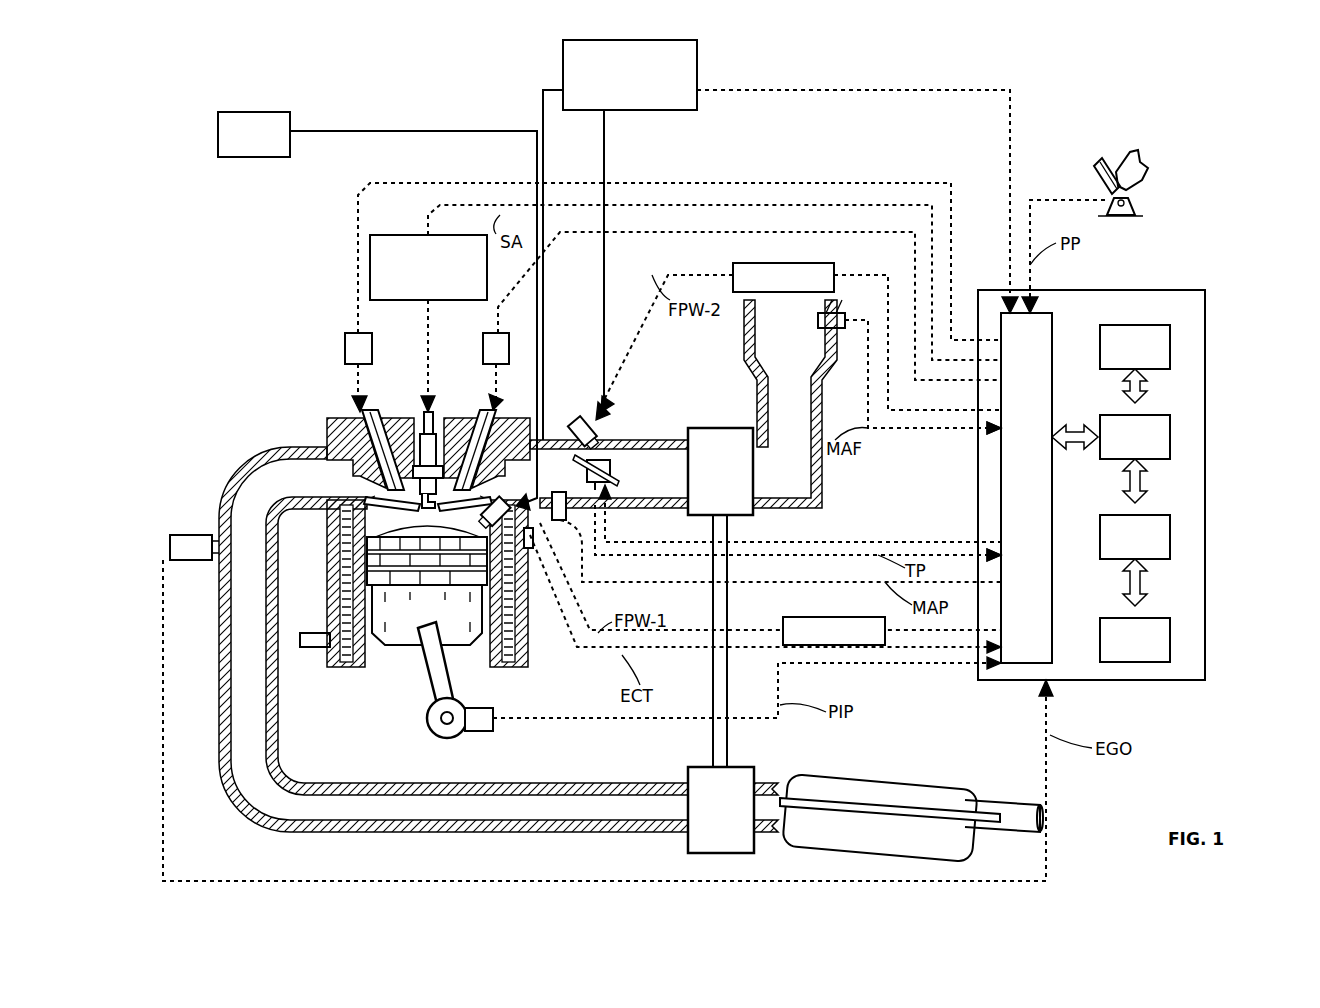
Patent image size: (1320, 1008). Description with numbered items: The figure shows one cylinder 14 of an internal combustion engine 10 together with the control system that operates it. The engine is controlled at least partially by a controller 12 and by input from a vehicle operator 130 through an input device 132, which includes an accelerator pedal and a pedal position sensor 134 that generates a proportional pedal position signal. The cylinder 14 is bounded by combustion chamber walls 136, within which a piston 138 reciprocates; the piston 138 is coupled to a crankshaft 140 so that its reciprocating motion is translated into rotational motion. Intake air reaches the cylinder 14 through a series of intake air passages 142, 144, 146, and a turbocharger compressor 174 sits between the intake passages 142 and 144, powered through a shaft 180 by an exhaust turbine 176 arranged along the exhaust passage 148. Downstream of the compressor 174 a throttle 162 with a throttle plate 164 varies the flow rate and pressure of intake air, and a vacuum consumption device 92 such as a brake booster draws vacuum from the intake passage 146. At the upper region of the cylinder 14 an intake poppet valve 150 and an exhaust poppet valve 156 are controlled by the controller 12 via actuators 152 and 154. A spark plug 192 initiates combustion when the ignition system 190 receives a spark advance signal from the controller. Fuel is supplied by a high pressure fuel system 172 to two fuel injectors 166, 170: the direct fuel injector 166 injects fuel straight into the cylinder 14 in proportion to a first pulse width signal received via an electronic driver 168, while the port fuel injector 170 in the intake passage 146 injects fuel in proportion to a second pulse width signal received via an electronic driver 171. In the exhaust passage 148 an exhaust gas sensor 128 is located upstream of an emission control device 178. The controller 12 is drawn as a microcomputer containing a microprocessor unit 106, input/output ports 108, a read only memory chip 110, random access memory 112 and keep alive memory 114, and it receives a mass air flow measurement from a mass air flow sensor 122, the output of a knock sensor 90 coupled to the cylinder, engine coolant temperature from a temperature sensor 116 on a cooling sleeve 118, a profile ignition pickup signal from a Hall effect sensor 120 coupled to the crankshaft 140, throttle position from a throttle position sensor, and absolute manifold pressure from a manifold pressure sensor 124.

The internal combustion engine 10 is at (262, 377).
The controller 12 is at (1195, 292).
The cylinder 14 is at (350, 533).
The knock sensor 90 is at (315, 648).
The vacuum consumption device 92 is at (377, 311).
The microprocessor unit 106 is at (1170, 437).
The input/output ports 108 is at (1055, 318).
The read only memory chip 110 is at (1170, 345).
The random access memory 112 is at (1170, 537).
The keep alive memory 114 is at (1170, 640).
The temperature sensor 116 is at (535, 548).
The cooling sleeve 118 is at (520, 620).
The Hall effect sensor 120 is at (480, 735).
The mass air flow sensor 122 is at (838, 312).
The manifold pressure sensor 124 is at (566, 515).
The exhaust gas sensor 128 is at (170, 548).
The vehicle operator 130 is at (1142, 165).
The input device 132 is at (1097, 175).
The pedal position sensor 134 is at (1135, 204).
The combustion chamber walls 136 is at (372, 660).
The piston 138 is at (412, 618).
The crankshaft 140 is at (438, 738).
The intake air passage 142 is at (810, 346).
The intake air passage 144 is at (672, 480).
The intake air passage 146 is at (581, 480).
The exhaust passage 148 is at (316, 489).
The intake poppet valve 150 is at (472, 490).
The actuator 152 is at (483, 350).
The actuator 154 is at (345, 345).
The exhaust poppet valve 156 is at (390, 493).
The throttle 162 is at (600, 455).
The throttle plate 164 is at (623, 470).
The fuel injector 166 is at (494, 505).
The electronic driver 168 is at (783, 617).
The fuel injector 170 is at (585, 422).
The electronic driver 171 is at (733, 270).
The fuel system 172 is at (697, 45).
The compressor 174 is at (700, 428).
The exhaust turbine 176 is at (688, 845).
The emission control device 178 is at (875, 782).
The shaft 180 is at (730, 740).
The ignition system 190 is at (375, 235).
The spark plug 192 is at (424, 440).